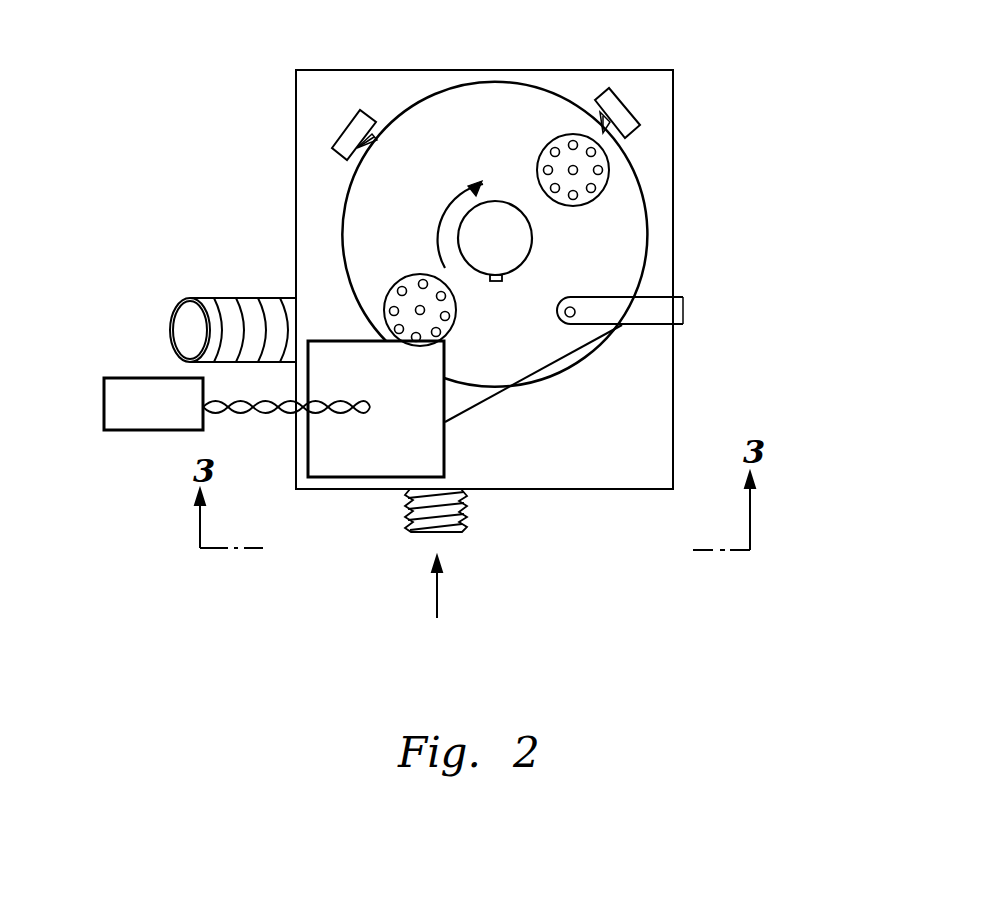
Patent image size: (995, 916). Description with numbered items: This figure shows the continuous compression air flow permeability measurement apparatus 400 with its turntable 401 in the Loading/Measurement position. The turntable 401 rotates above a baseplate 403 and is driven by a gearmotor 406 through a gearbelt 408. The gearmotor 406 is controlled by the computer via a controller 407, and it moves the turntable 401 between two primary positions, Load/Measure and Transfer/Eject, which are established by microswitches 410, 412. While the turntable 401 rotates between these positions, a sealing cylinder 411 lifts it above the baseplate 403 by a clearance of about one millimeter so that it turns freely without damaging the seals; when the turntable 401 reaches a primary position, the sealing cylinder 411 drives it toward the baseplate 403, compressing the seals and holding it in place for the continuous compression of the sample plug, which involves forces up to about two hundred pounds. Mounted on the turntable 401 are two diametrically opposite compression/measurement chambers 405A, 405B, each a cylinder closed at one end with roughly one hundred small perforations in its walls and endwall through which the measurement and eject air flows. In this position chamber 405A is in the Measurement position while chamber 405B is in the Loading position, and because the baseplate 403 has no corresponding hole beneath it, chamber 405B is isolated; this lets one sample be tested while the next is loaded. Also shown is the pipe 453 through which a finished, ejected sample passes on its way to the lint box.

The continuous compression air flow permeability measurement apparatus 400 is at (745, 65).
The turntable 401 is at (637, 180).
The baseplate 403 is at (673, 365).
The compression/measurement chamber 405A is at (592, 198).
The compression/measurement chamber 405B is at (397, 290).
The gearmotor 406 is at (308, 462).
The controller 407 is at (152, 378).
The gearbelt 408 is at (472, 407).
The microswitch 410 is at (352, 124).
The sealing cylinder 411 is at (497, 201).
The microswitch 412 is at (630, 105).
The pipe 453 is at (217, 298).